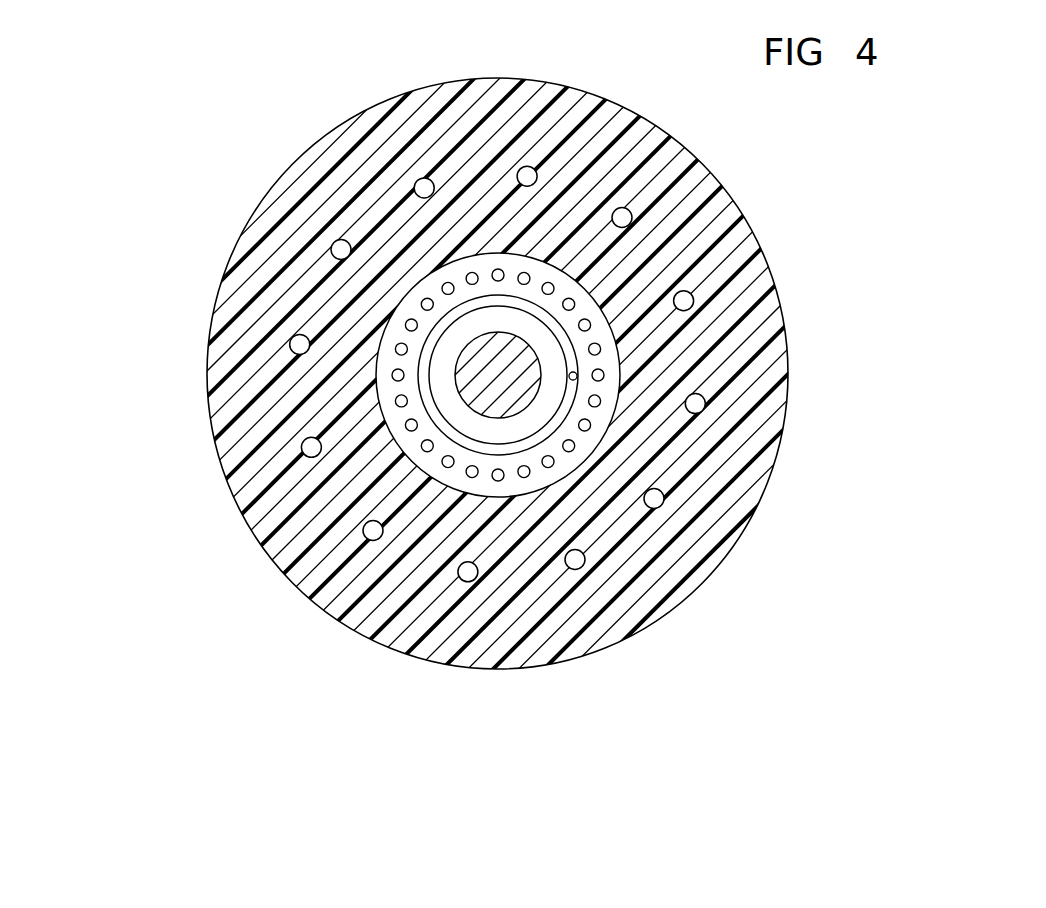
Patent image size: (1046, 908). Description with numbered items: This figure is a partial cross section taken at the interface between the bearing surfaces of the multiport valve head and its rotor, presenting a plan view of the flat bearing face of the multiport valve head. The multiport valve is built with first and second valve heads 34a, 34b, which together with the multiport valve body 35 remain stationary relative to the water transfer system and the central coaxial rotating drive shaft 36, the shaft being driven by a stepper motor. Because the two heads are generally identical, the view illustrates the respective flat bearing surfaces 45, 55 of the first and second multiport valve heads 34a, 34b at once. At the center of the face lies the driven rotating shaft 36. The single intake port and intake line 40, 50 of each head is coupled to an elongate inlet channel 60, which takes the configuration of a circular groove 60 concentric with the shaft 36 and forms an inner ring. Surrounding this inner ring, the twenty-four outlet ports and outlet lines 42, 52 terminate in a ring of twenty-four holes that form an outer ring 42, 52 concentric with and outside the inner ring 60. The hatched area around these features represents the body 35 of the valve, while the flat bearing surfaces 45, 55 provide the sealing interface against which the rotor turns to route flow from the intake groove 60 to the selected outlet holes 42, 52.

The multiport valve body 35 is at (758, 510).
The first valve head 34a is at (337, 416).
The second valve head 34b is at (337, 416).
The flat bearing surface 45 is at (337, 416).
The flat bearing surface 55 is at (407, 307).
The outlet ports and outlet lines 42 is at (480, 317).
The outlet ports and outlet lines 52 is at (572, 305).
The intake port and intake line 40 is at (680, 354).
The intake port and intake line 50 is at (573, 376).
The inlet channel 60 is at (465, 443).
The rotating drive shaft 36 is at (510, 388).